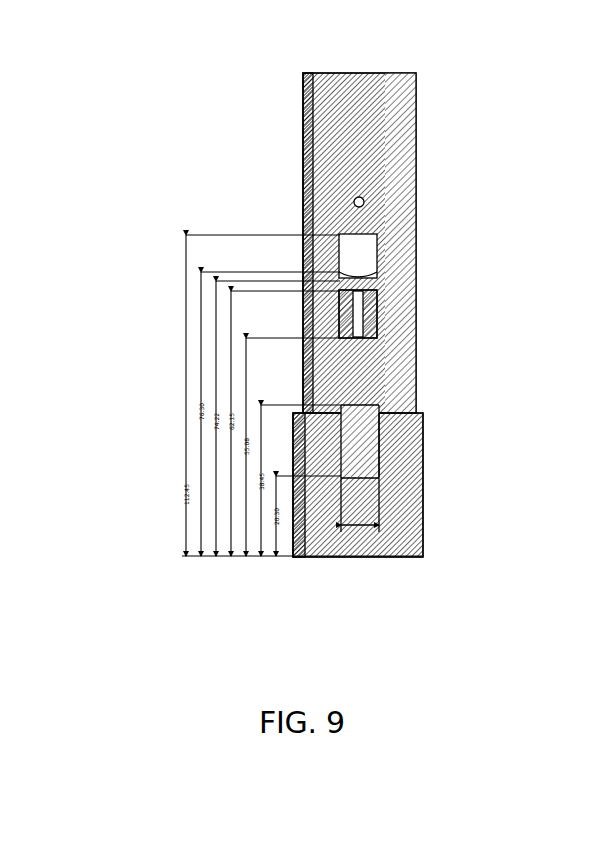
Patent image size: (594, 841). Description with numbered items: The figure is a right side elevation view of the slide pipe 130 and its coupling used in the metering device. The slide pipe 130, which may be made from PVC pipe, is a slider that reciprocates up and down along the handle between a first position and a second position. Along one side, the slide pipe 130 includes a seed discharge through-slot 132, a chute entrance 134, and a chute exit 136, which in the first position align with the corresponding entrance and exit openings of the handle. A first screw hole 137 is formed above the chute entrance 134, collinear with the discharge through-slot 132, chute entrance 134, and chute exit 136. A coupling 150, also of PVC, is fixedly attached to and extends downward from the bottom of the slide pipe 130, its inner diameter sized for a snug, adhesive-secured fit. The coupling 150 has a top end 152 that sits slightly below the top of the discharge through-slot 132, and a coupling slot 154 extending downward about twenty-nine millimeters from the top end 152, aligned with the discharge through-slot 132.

The slide pipe 130 is at (303, 150).
The seed discharge through-slot 132 is at (380, 432).
The chute entrance 134 is at (378, 241).
The chute exit 136 is at (378, 315).
The first screw hole 137 is at (364, 194).
The coupling 150 is at (422, 498).
The top end 152 is at (405, 418).
The coupling slot 154 is at (380, 443).